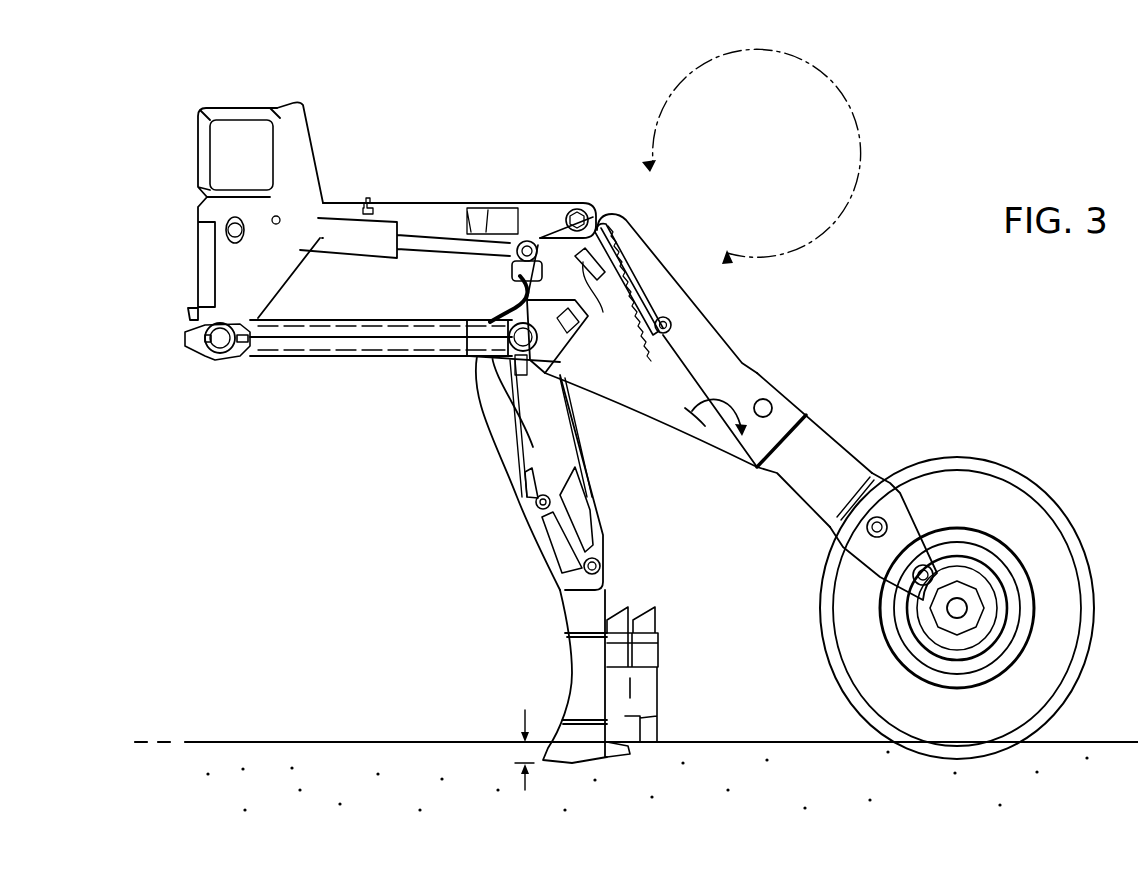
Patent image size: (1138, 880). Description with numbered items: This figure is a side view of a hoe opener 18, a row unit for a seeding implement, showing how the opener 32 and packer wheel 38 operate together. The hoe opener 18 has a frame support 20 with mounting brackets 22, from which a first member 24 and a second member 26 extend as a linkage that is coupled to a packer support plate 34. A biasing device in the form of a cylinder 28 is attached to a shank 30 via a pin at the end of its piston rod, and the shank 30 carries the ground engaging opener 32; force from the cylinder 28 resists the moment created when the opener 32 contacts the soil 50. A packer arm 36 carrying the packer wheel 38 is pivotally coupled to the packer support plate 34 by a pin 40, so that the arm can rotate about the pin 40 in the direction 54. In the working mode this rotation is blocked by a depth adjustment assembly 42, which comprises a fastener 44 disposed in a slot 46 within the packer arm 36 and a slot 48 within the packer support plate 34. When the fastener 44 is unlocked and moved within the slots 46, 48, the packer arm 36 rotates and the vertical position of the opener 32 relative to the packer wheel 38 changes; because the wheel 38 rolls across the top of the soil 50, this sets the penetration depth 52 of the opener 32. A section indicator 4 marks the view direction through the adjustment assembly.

The section view indicator 4 is at (750, 163).
The hoe opener 18 is at (675, 160).
The frame support 20 is at (301, 146).
The mounting brackets 22 is at (251, 108).
The first member 24 is at (329, 360).
The second member 26 is at (431, 206).
The cylinder 28 is at (373, 251).
The shank 30 is at (593, 469).
The opener 32 is at (557, 750).
The packer support plate 34 is at (641, 393).
The packer arm 36 is at (722, 357).
The packer wheel 38 is at (973, 466).
The pin 40 is at (769, 400).
The depth adjustment assembly 42 is at (681, 204).
The fastener 44 is at (668, 319).
The slot 46 is at (648, 298).
The slot 48 is at (558, 308).
The soil 50 is at (731, 752).
The depth 52 is at (523, 752).
The direction 54 is at (689, 413).